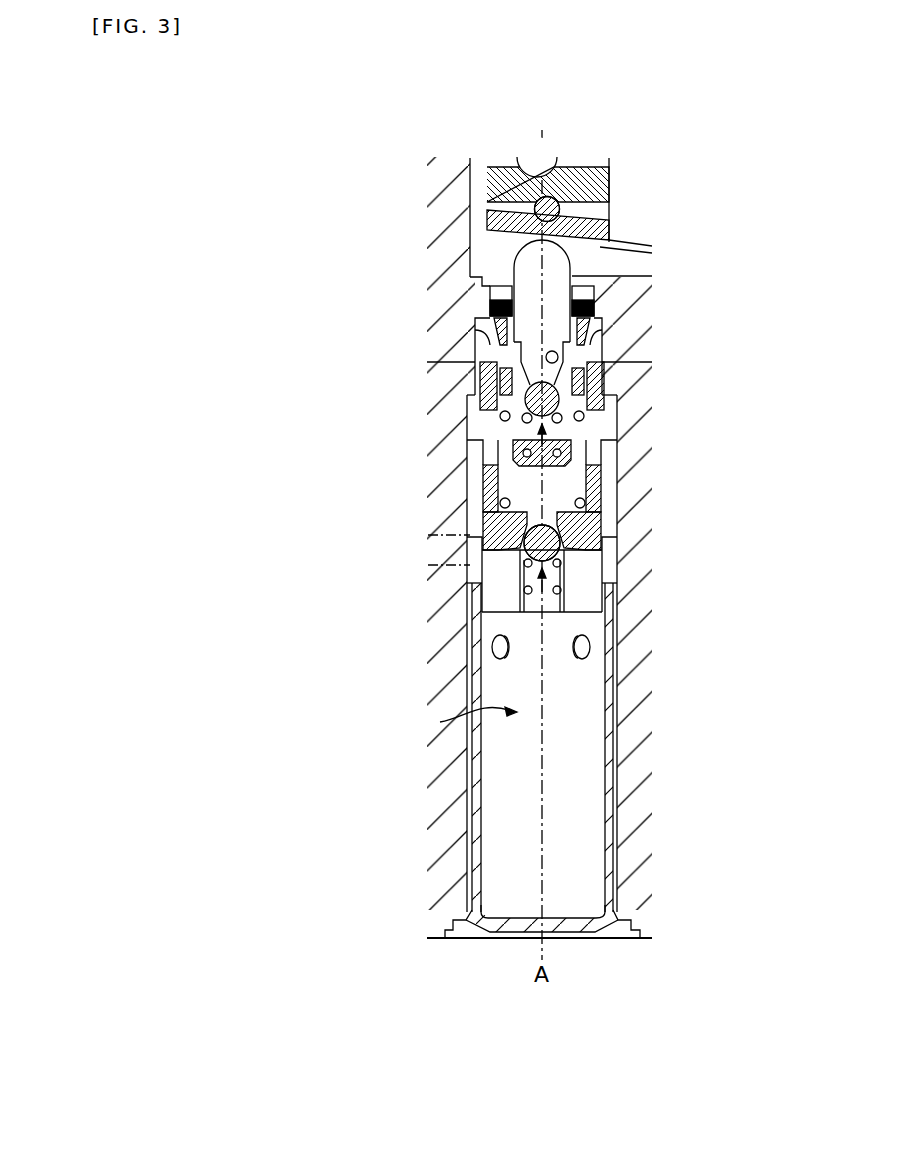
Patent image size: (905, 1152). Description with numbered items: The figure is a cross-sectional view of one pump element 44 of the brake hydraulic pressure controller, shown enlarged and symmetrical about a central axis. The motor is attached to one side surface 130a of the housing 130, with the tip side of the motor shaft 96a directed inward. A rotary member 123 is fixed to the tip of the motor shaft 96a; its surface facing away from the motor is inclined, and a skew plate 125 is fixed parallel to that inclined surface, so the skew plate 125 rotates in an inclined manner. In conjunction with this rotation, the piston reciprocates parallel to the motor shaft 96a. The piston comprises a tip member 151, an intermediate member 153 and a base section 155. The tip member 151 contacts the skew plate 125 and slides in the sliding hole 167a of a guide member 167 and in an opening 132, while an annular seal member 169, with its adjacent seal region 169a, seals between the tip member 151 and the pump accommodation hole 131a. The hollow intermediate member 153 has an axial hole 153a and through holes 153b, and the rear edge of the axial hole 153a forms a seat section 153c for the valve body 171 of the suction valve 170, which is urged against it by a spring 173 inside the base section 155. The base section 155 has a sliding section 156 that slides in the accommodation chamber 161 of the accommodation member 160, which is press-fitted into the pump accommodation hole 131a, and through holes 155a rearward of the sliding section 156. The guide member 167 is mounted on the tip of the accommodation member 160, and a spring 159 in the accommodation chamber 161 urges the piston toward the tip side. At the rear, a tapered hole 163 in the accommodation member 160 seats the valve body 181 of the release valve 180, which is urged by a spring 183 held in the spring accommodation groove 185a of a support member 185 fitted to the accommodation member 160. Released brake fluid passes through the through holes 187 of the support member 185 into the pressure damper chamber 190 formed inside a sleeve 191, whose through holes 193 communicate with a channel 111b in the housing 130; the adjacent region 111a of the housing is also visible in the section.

The pump element 44 is at (772, 191).
The motor shaft 96a is at (625, 175).
The rotary member 123 is at (487, 182).
The skew plate 125 is at (487, 222).
The opening 132 is at (572, 266).
The one side surface 130a is at (478, 268).
The housing 130 is at (440, 296).
The upper body 111a is at (470, 410).
The channel 111b is at (470, 578).
The tip member 151 is at (578, 298).
The intermediate member 153 is at (606, 376).
The axial hole 153a is at (598, 398).
The through hole 153b is at (475, 361).
The seat section 153c is at (590, 418).
The guide member 167 is at (590, 326).
The sliding hole 167a is at (492, 336).
The annular seal member 169 is at (480, 305).
The lip portion 169a is at (603, 350).
The base section 155 is at (486, 452).
The through hole 155a is at (585, 445).
The sliding section 156 is at (483, 427).
The valve body 171 is at (480, 470).
The spring 173 is at (590, 470).
The suction valve 170 is at (615, 483).
The spring 159 is at (607, 505).
The accommodation member 160 is at (478, 492).
The accommodation chamber 161 is at (468, 508).
The valve body 181 is at (560, 535).
The support member 185 is at (605, 550).
The spring accommodation groove 185a is at (512, 588).
The spring 183 is at (482, 618).
The through hole 187 is at (603, 602).
The tapered hole 163 is at (590, 572).
The release valve 180 is at (620, 614).
The through hole 193 is at (590, 648).
The pressure damper chamber 190 is at (440, 722).
The sleeve 191 is at (607, 707).
The pump accommodation hole 131a is at (603, 765).